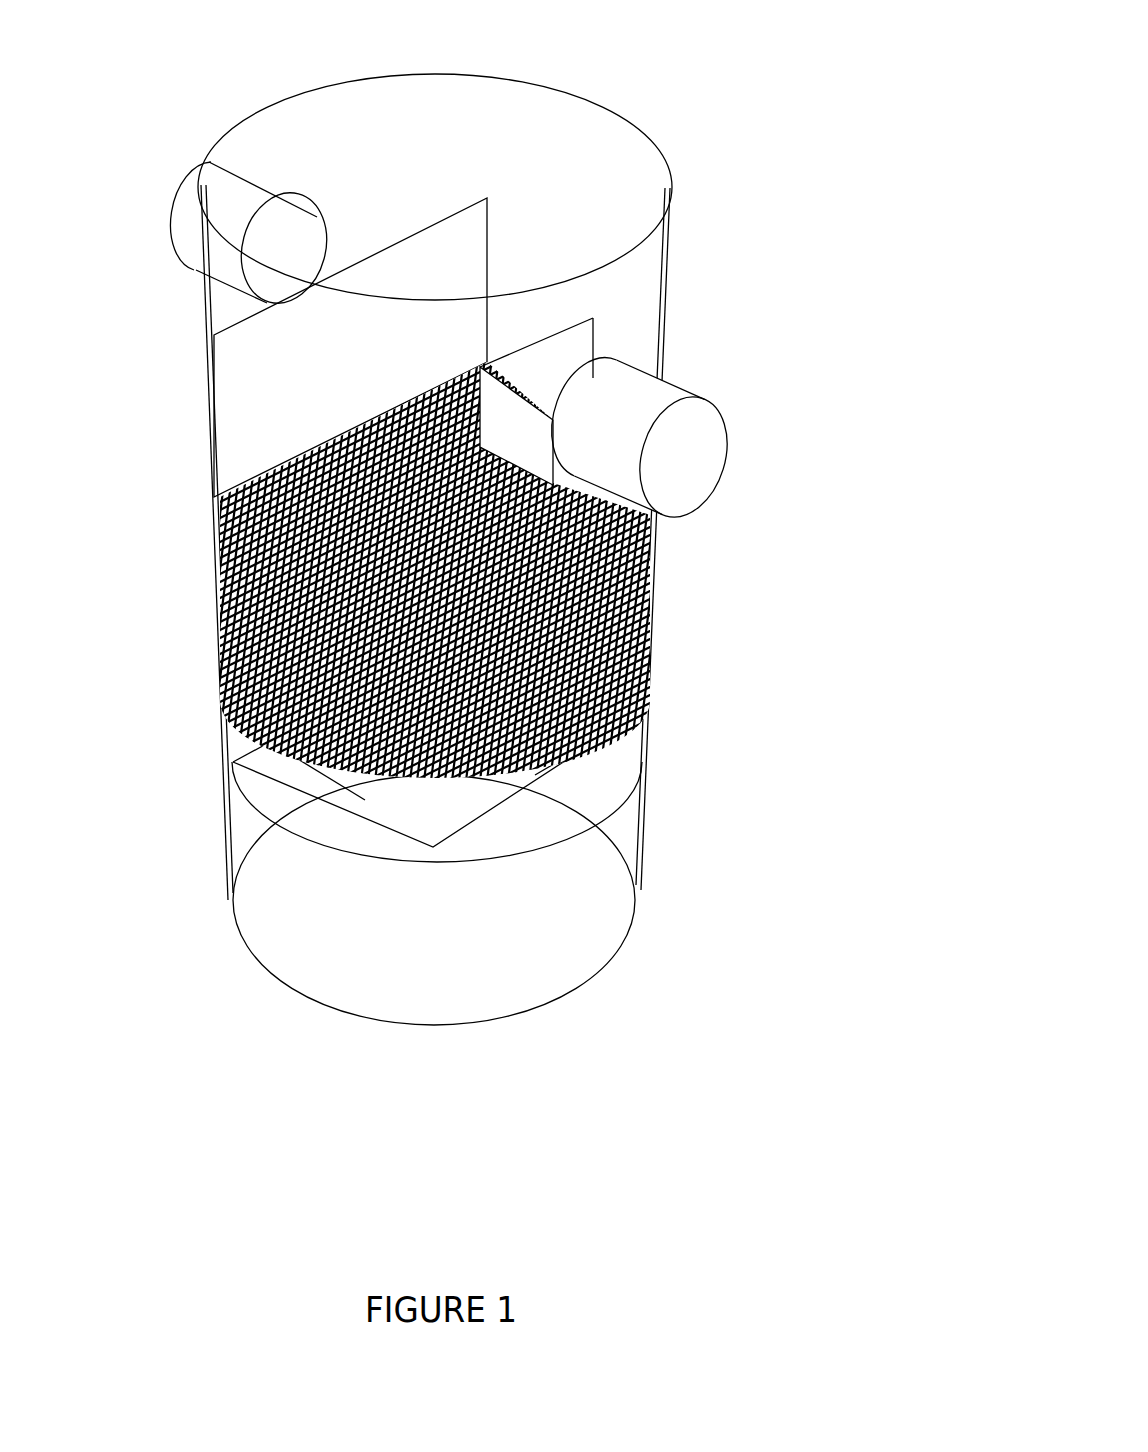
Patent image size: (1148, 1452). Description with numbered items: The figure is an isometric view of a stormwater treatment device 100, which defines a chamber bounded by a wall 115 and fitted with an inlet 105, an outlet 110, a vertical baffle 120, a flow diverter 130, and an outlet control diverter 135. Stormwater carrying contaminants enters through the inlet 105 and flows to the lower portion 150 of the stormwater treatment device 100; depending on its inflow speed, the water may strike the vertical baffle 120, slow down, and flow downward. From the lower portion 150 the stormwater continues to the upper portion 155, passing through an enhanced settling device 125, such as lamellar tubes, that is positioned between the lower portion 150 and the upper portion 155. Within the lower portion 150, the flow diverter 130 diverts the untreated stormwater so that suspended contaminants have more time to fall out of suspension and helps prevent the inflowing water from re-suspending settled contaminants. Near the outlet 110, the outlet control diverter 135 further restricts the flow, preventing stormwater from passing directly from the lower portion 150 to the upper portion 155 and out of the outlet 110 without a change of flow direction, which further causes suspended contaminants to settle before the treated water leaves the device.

The stormwater treatment device 100 is at (830, 1145).
The inlet 105 is at (170, 210).
The outlet 110 is at (725, 433).
The wall 115 is at (620, 948).
The vertical baffle 120 is at (380, 250).
The enhanced settling device 125 is at (220, 657).
The flow diverter 130 is at (570, 837).
The outlet control diverter 135 is at (597, 331).
The lower portion 150 is at (469, 935).
The upper portion 155 is at (394, 372).